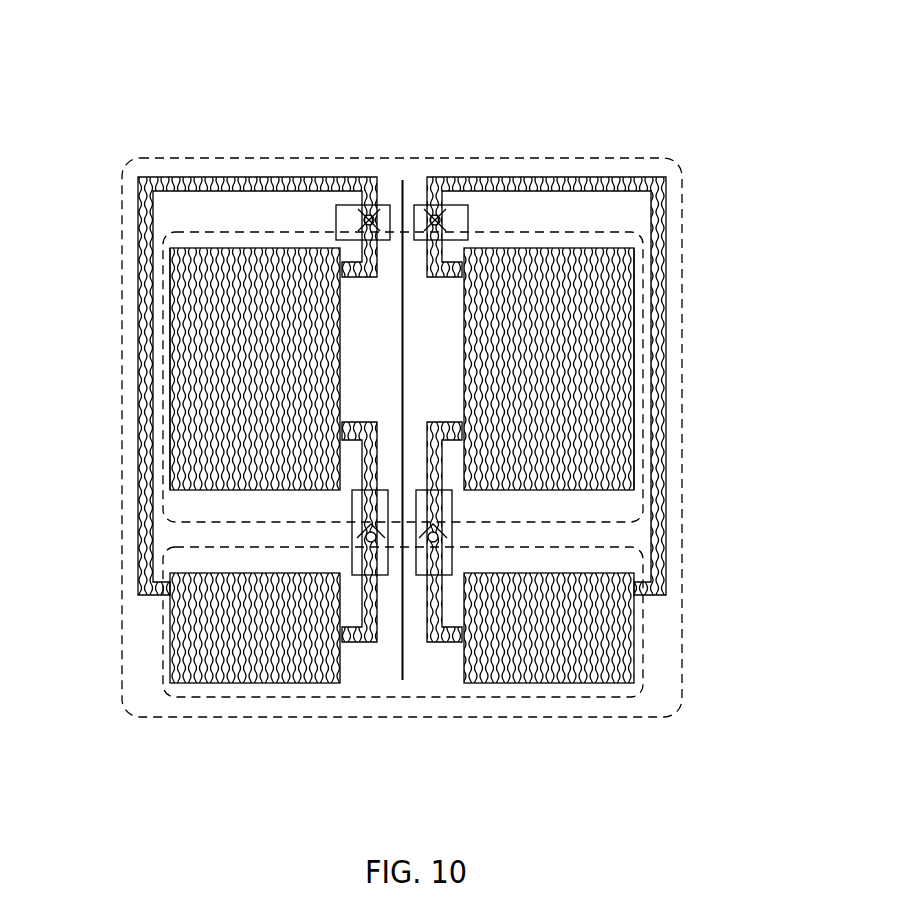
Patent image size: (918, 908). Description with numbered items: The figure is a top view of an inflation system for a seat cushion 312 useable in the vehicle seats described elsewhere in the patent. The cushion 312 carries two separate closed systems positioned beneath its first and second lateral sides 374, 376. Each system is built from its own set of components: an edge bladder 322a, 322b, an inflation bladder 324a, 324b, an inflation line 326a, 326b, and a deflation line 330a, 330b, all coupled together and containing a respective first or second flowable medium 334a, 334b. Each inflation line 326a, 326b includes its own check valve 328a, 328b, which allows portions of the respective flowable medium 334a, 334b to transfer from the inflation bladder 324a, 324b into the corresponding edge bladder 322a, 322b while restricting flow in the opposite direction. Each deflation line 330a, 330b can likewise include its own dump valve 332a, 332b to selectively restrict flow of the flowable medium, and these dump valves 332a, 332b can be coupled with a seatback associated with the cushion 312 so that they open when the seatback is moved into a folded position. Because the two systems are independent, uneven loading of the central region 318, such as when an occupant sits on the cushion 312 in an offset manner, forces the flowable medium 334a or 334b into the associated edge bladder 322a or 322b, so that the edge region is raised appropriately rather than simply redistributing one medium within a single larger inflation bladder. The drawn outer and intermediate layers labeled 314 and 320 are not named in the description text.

The cushion 312 is at (727, 505).
The outer layer 314 is at (685, 643).
The central region 318 is at (265, 232).
The intermediate layer 320 is at (158, 663).
The edge bladder 322a is at (266, 683).
The edge bladder 322b is at (578, 683).
The inflation bladder 324a is at (220, 272).
The inflation bladder 324b is at (550, 265).
The inflation line 326a is at (357, 422).
The inflation line 326b is at (447, 422).
The check valve 328a is at (385, 570).
The check valve 328b is at (420, 563).
The deflation line 330a is at (138, 434).
The deflation line 330b is at (665, 407).
The dump valve 332a is at (348, 214).
The dump valve 332b is at (453, 214).
The first flowable medium 334a is at (172, 342).
The second flowable medium 334b is at (592, 250).
The first lateral side 374 is at (206, 77).
The second lateral side 376 is at (587, 81).